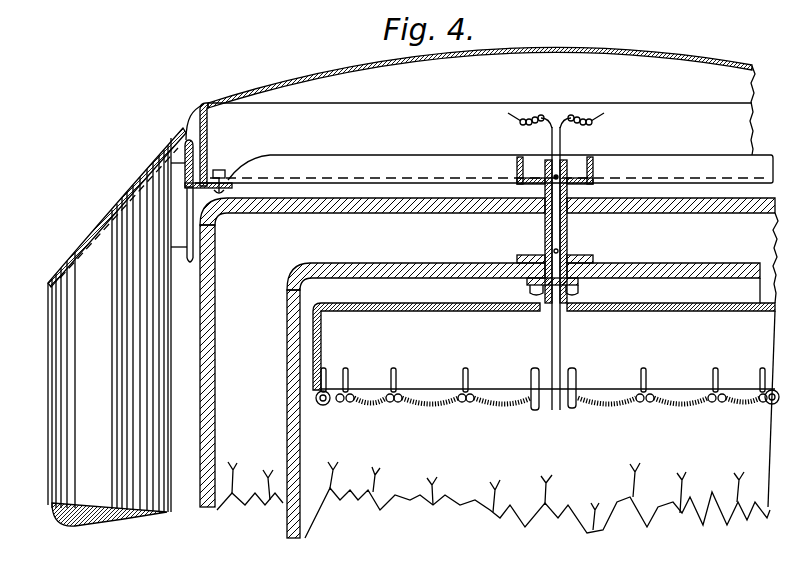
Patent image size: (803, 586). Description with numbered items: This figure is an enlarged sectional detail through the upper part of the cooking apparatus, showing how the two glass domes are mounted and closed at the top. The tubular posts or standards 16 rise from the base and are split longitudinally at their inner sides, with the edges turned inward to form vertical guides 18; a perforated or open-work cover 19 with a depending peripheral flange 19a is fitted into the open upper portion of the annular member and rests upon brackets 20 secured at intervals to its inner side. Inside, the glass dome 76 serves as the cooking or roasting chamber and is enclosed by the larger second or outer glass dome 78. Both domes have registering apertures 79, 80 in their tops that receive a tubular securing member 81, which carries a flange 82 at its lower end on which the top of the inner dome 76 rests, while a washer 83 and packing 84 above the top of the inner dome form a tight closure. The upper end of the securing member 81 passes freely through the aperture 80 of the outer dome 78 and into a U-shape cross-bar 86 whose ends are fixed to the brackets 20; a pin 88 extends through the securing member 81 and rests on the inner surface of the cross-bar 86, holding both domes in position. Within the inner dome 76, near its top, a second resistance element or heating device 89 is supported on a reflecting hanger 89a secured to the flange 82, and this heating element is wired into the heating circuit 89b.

The tubular posts or standards 16 is at (55, 428).
The vertical guides 18 is at (187, 128).
The perforated or open-work cover 19 is at (564, 56).
The depending peripheral flange 19a is at (208, 131).
The brackets 20 is at (214, 188).
The glass dome 76 is at (299, 539).
The second or outer glass dome 78 is at (210, 508).
The aperture 79 is at (586, 268).
The aperture 80 is at (568, 212).
The tubular securing member 81 is at (551, 233).
The flange 82 is at (579, 280).
The washer 83 is at (572, 261).
The packing 84 is at (517, 258).
The U-shape cross-bar 86 is at (448, 166).
The pin 88 is at (562, 174).
The second resistance element or heating device 89 is at (606, 403).
The reflecting hanger 89a is at (430, 308).
The circuit 89b is at (556, 116).